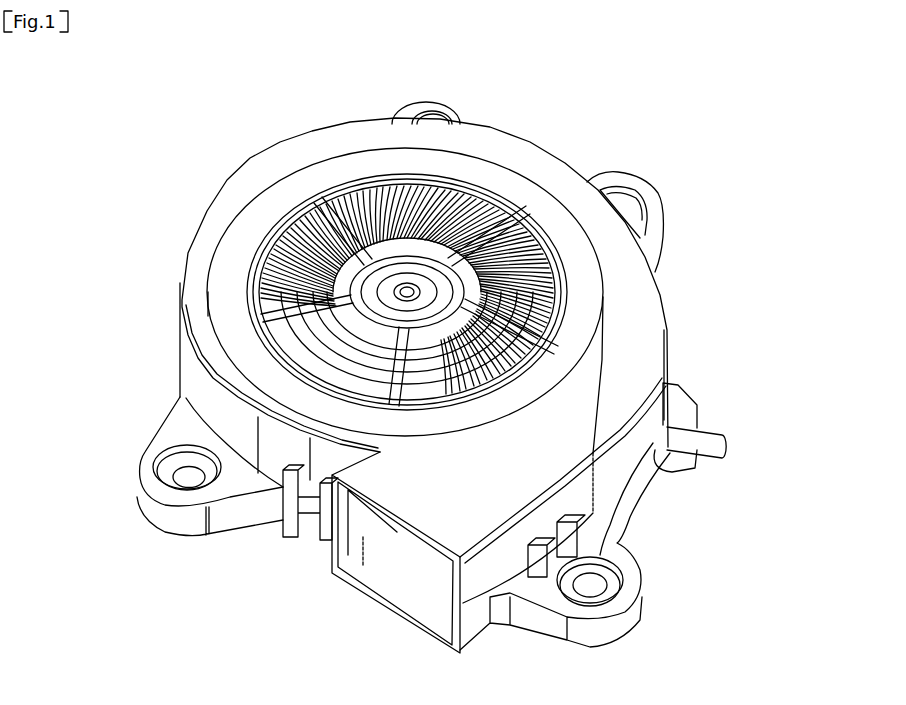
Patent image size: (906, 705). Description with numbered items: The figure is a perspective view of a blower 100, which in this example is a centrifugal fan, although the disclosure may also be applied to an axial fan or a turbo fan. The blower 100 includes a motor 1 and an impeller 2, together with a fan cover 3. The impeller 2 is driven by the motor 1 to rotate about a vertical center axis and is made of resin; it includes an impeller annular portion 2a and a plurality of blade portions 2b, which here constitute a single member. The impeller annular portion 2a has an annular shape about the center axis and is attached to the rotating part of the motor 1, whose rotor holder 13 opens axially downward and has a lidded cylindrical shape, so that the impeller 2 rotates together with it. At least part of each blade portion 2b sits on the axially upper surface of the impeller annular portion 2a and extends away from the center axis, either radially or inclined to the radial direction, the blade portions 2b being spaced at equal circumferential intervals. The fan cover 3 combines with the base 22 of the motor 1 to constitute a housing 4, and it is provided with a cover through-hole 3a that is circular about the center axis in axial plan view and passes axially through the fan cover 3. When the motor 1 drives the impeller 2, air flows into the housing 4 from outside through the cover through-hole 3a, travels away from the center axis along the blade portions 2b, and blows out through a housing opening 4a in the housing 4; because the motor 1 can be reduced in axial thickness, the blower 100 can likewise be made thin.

The blower 100 is at (665, 126).
The motor 1 is at (560, 275).
The impeller 2 is at (292, 228).
The impeller annular portion 2a is at (288, 349).
The blade portions 2b is at (263, 237).
The fan cover 3 is at (635, 452).
The cover through-hole 3a is at (463, 391).
The housing 4 is at (779, 490).
The housing opening 4a is at (403, 587).
The rotor holder 13 is at (505, 383).
The base 22 is at (627, 500).